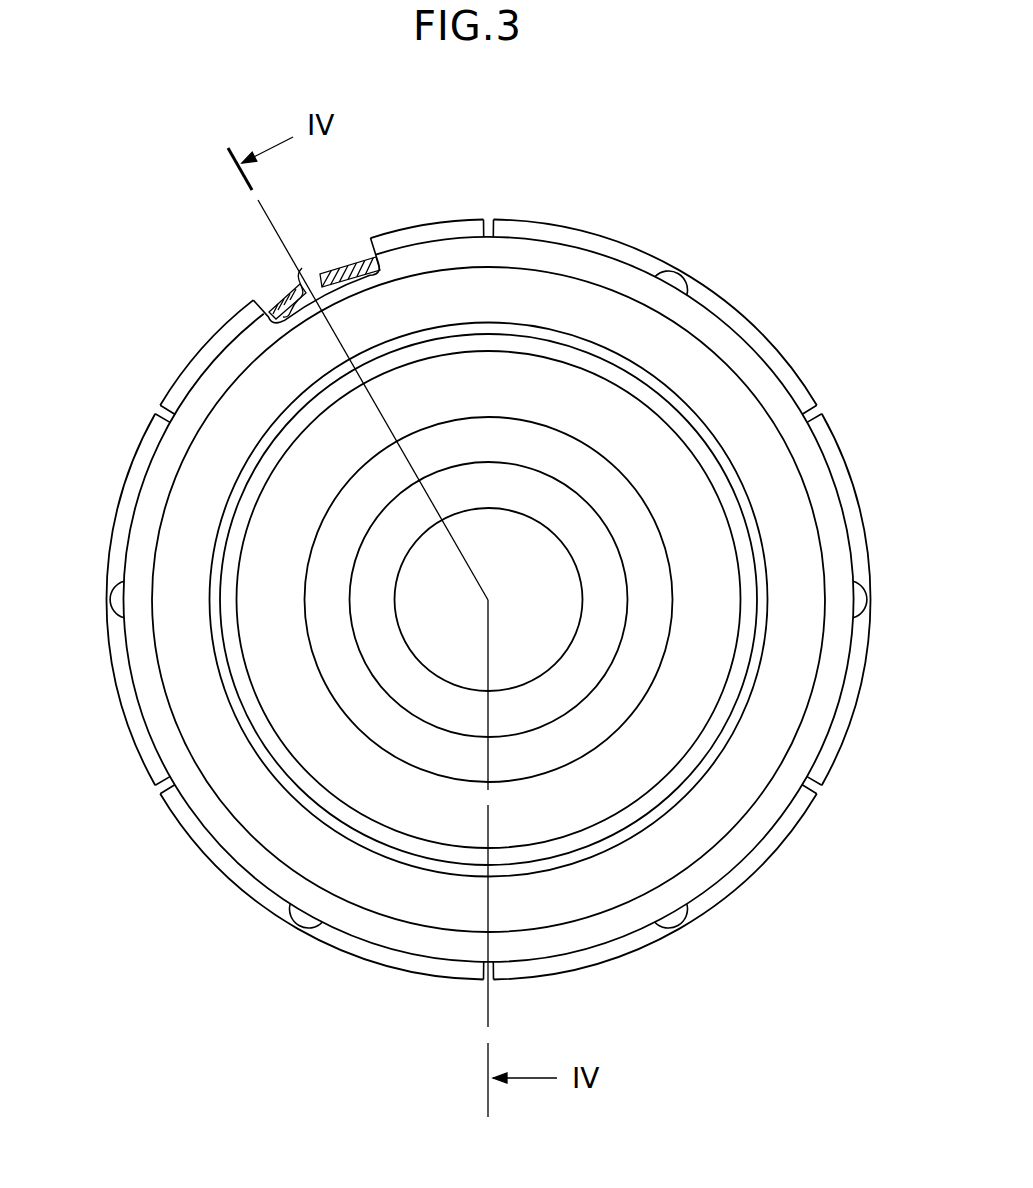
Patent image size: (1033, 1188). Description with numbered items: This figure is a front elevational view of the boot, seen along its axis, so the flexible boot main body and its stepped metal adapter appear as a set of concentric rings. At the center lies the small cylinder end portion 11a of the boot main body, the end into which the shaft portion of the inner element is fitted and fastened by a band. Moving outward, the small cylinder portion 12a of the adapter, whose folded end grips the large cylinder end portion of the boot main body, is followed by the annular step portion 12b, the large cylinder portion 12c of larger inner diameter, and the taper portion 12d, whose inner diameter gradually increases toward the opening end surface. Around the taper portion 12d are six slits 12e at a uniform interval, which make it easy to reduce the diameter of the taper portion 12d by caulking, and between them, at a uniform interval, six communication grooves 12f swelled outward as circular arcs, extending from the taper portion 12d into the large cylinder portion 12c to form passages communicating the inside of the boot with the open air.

The small cylinder end portion 11a is at (578, 532).
The small cylinder portion 12a is at (408, 927).
The annular step portion 12b is at (233, 842).
The large cylinder portion 12c is at (130, 680).
The taper portion 12d is at (128, 490).
The slits 12e is at (547, 179).
The communication grooves 12f is at (330, 262).